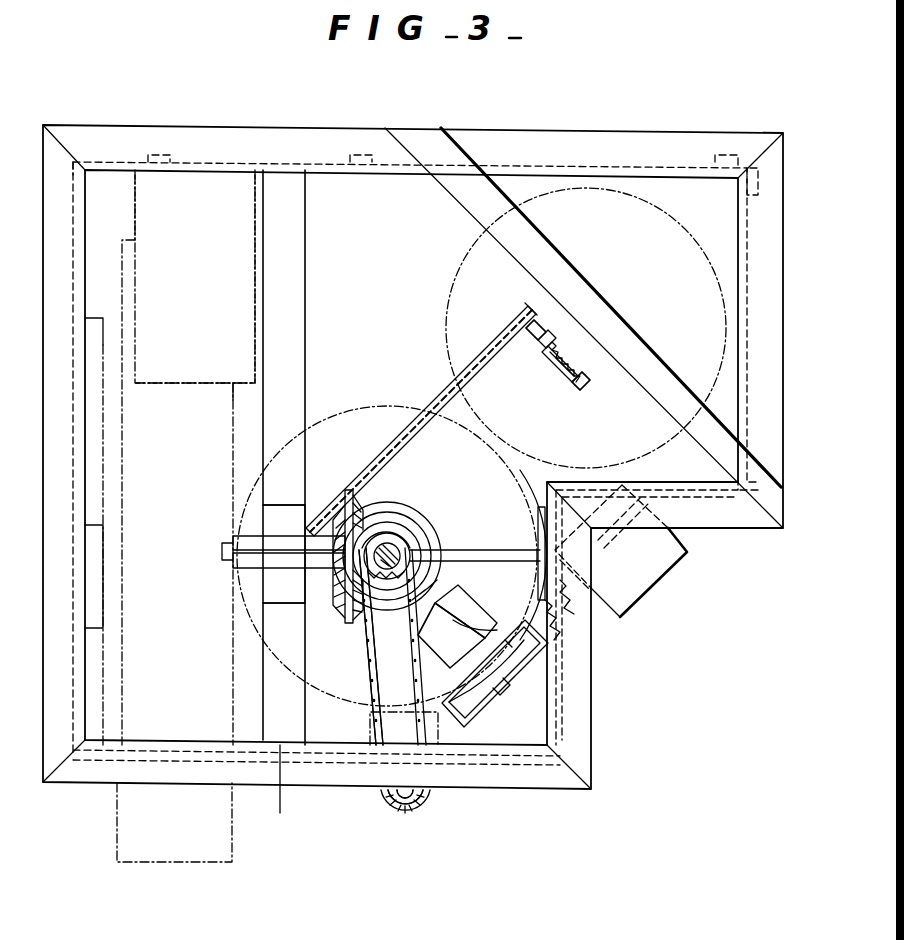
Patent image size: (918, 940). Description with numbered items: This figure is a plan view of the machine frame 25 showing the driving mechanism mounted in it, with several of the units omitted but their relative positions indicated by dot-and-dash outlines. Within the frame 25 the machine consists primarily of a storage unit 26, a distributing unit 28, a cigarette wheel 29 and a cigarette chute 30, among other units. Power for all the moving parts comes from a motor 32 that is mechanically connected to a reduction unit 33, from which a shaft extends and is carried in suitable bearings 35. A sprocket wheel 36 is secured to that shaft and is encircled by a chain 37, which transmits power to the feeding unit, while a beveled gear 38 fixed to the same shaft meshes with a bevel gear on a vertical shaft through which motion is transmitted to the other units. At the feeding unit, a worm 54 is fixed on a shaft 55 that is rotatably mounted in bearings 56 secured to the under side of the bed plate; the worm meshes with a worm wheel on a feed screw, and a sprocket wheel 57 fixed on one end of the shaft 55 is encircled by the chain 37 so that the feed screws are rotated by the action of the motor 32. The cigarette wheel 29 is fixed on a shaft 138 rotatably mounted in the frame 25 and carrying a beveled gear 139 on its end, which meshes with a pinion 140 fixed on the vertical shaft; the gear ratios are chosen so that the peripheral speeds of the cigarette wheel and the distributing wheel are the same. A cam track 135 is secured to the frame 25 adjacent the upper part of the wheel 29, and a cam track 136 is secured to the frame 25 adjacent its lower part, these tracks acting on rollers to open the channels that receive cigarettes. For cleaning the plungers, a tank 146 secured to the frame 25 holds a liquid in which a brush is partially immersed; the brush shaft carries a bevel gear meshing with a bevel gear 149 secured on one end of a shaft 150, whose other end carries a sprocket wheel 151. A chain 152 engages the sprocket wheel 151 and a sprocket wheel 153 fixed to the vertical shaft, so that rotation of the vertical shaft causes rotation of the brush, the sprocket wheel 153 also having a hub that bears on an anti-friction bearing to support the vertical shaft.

The frame 25 is at (96, 126).
The storage unit 26 is at (640, 190).
The distributing unit 28 is at (278, 795).
The cigarette wheel 29 is at (186, 863).
The cigarette chute 30 is at (135, 262).
The motor 32 is at (650, 580).
The reduction unit 33 is at (548, 660).
The bearings 35 is at (495, 628).
The sprocket wheel 36 is at (338, 512).
The chain 37 is at (445, 390).
The beveled gear 38 is at (465, 578).
The worm 54 is at (575, 370).
The shaft 55 is at (570, 386).
The bearings 56 is at (540, 335).
The sprocket wheel 57 is at (530, 312).
The cam track 135 is at (120, 338).
The cam track 136 is at (100, 606).
The shaft 138 is at (226, 546).
The beveled gear 139 is at (345, 600).
The pinion 140 is at (400, 547).
The tank 146 is at (362, 740).
The bevel gear 149 is at (415, 812).
The shaft 150 is at (398, 810).
The sprocket wheel 151 is at (430, 806).
The chain 152 is at (372, 688).
The sprocket wheel 153 is at (393, 582).